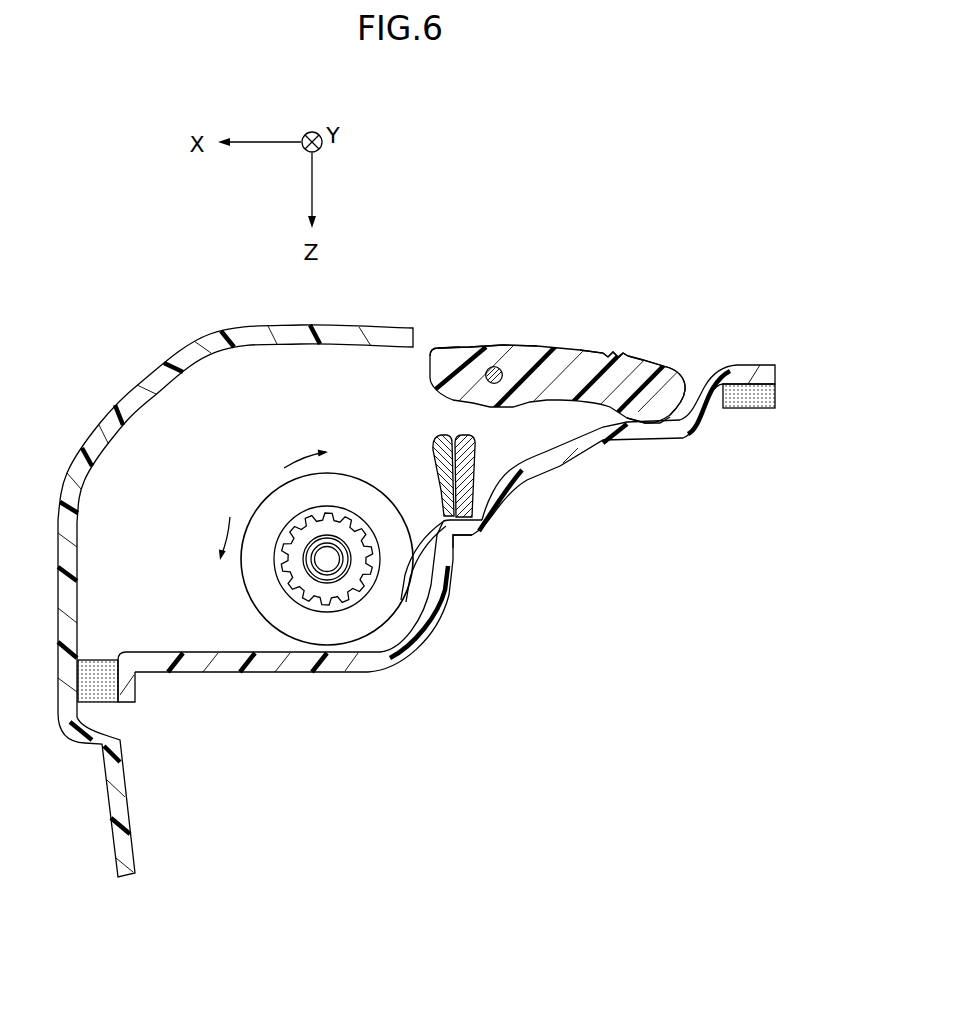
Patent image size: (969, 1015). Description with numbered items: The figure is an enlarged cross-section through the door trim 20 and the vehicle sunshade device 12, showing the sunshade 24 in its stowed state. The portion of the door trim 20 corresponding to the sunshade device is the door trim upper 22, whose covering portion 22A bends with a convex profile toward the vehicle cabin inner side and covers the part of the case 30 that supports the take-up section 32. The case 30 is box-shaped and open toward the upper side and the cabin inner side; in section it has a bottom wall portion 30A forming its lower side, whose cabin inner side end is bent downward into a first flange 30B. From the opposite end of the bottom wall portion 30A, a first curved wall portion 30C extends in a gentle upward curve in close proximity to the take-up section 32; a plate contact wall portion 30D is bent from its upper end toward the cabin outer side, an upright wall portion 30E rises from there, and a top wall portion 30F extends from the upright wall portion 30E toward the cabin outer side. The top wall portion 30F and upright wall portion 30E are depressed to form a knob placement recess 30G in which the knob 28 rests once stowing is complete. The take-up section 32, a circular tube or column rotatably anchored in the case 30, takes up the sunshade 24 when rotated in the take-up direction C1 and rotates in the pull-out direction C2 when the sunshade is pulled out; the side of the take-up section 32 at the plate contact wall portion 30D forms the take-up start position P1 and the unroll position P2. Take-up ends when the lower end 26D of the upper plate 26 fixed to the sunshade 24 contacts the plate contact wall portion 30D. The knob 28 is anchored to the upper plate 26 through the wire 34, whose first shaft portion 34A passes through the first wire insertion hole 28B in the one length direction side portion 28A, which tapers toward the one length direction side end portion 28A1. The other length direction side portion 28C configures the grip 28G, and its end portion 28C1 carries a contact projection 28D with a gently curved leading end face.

The vehicle sunshade device 12 is at (440, 763).
The door trim 20 is at (235, 573).
The door trim upper 22 is at (129, 388).
The covering portion 22A is at (223, 334).
The sunshade 24 is at (431, 522).
The upper plate 26 is at (482, 458).
The lower end 26D is at (468, 540).
The knob 28 is at (543, 347).
The one length direction side portion 28A is at (493, 367).
The one length direction side end portion 28A1 is at (445, 347).
The first wire insertion hole 28B is at (497, 370).
The other length direction side portion 28C is at (635, 357).
The other length direction side end portion 28C1 is at (670, 368).
The contact projection 28D is at (650, 426).
The grip 28G is at (600, 352).
The case 30 is at (225, 676).
The bottom wall portion 30A is at (187, 674).
The first flange 30B is at (137, 703).
The first curved wall portion 30C is at (420, 637).
The plate contact wall portion 30D is at (478, 538).
The upright wall portion 30E is at (503, 503).
The top wall portion 30F is at (767, 365).
The knob placement recess 30G is at (538, 458).
The take-up section 32 is at (257, 581).
The wire 34 is at (394, 374).
The first shaft portion 34A is at (485, 376).
The take-up direction C1 is at (290, 460).
The pull-out direction C2 is at (226, 535).
The take-up start position P1 is at (523, 612).
The unroll position P2 is at (421, 563).